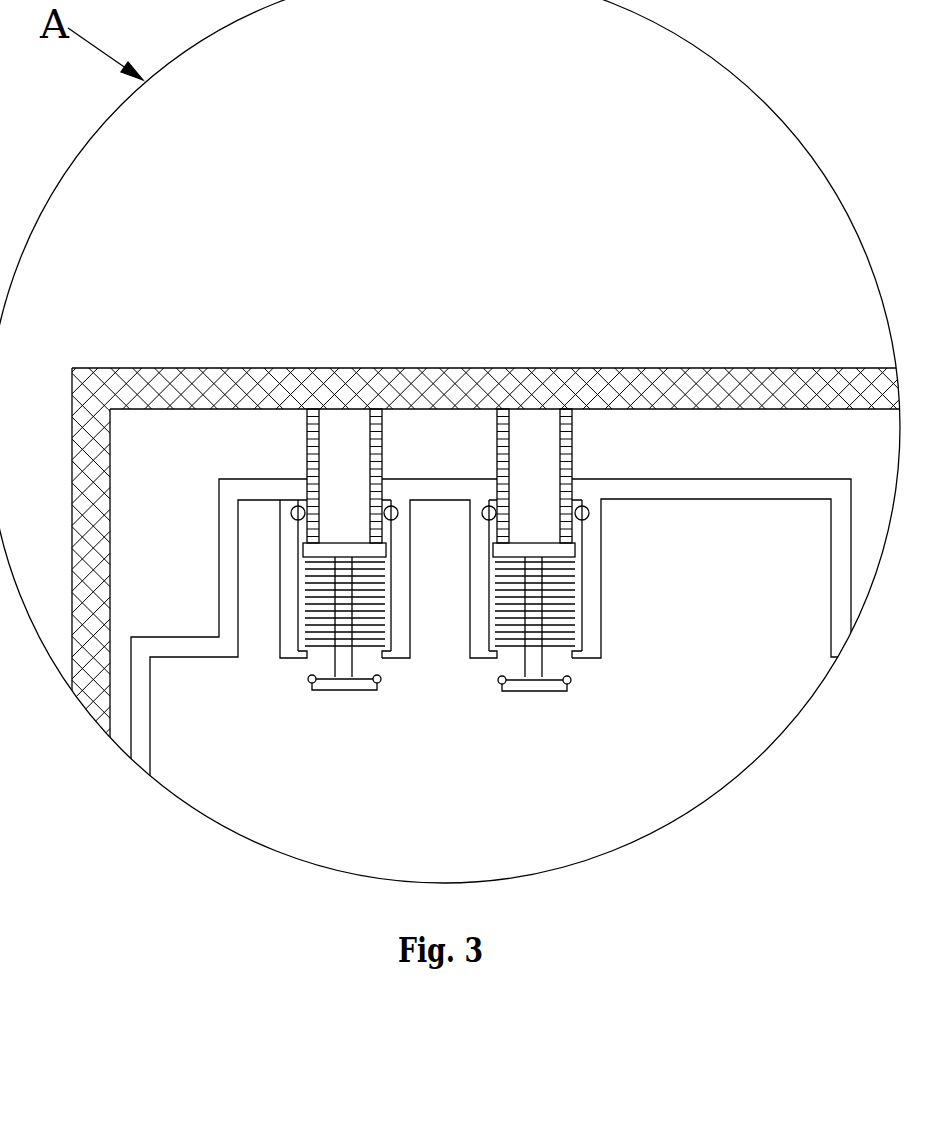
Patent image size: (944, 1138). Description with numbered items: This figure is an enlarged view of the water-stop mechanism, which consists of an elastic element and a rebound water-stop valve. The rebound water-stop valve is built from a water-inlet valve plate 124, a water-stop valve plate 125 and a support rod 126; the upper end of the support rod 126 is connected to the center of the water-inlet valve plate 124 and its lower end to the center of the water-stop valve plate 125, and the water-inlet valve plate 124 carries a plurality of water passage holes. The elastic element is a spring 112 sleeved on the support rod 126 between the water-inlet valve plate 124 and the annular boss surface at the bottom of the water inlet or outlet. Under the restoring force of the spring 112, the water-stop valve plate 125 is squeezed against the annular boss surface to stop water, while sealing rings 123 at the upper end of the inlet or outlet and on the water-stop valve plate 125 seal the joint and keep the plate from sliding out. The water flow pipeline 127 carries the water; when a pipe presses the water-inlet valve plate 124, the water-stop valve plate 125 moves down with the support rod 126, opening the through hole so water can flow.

The spring 112 is at (322, 617).
The sealing ring 123 is at (589, 511).
The water-inlet valve plate 124 is at (575, 548).
The water-stop valve plate 125 is at (353, 688).
The support rod 126 is at (347, 617).
The water flow pipeline 127 is at (497, 449).